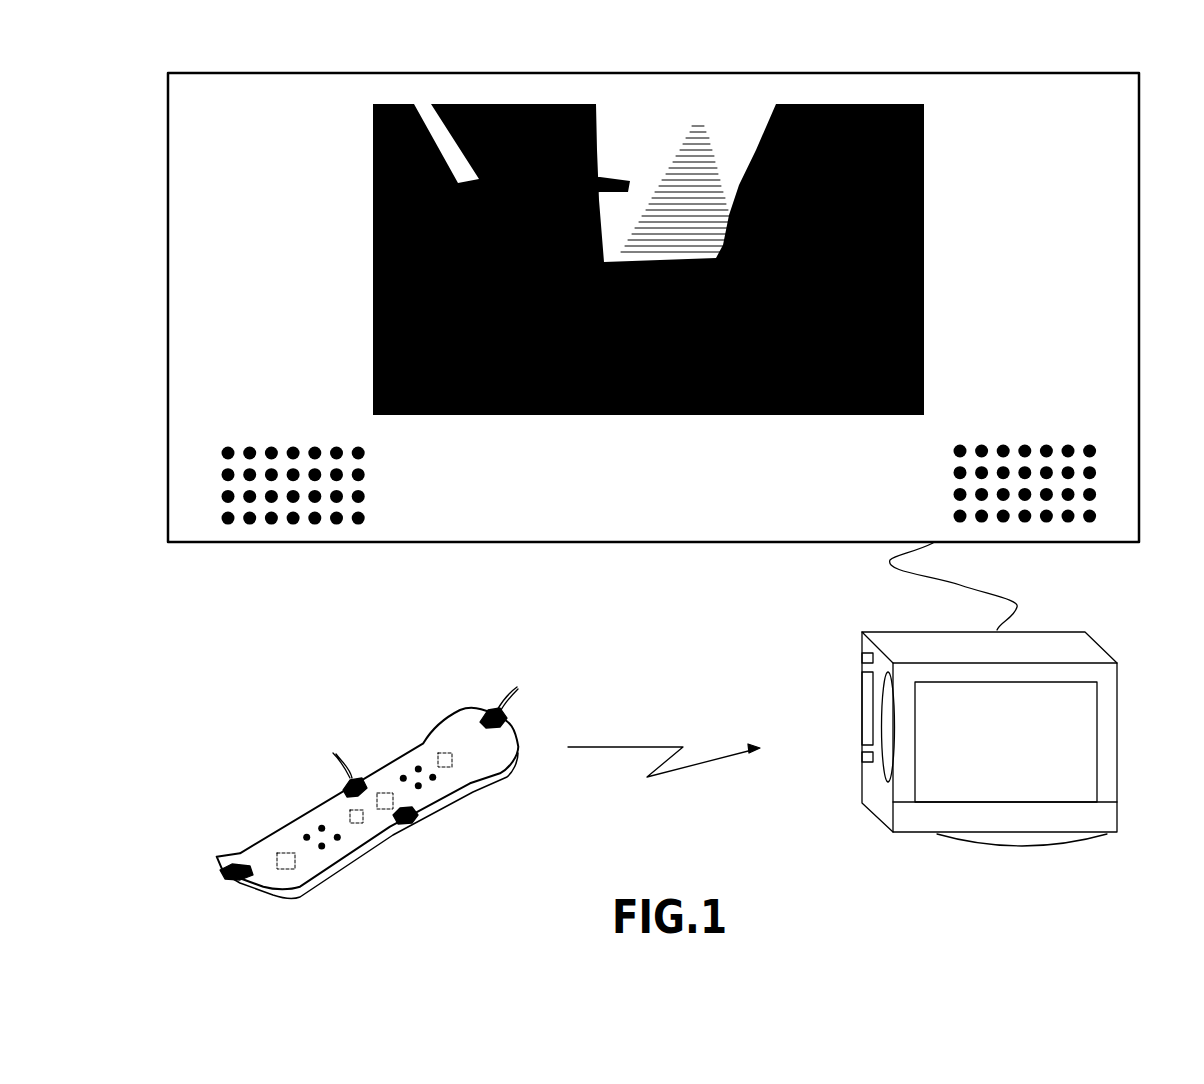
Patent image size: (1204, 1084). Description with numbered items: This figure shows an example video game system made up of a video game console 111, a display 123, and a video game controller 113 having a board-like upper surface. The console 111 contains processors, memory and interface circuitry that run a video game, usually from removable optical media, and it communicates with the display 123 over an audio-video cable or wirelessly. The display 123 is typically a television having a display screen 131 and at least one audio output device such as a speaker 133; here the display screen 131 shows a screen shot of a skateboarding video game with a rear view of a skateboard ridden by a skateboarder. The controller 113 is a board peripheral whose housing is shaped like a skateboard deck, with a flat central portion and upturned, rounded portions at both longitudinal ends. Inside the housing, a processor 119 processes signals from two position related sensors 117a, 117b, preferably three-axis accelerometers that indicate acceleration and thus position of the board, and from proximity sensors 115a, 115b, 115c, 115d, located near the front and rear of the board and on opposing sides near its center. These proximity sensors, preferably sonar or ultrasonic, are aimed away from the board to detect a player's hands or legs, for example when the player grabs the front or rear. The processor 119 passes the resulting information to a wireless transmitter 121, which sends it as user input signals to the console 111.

The video game console 111 is at (1107, 832).
The video game controller 113 is at (417, 882).
The proximity sensor 115a is at (353, 777).
The proximity sensor 115b is at (490, 708).
The proximity sensor 115c is at (417, 823).
The proximity sensor 115d is at (235, 878).
The position related sensor 117a is at (445, 753).
The position related sensor 117b is at (287, 853).
The processor 119 is at (385, 793).
The wireless transmitter 121 is at (352, 812).
The display 123 is at (675, 543).
The display screen 131 is at (672, 415).
The speaker 133 is at (367, 480).